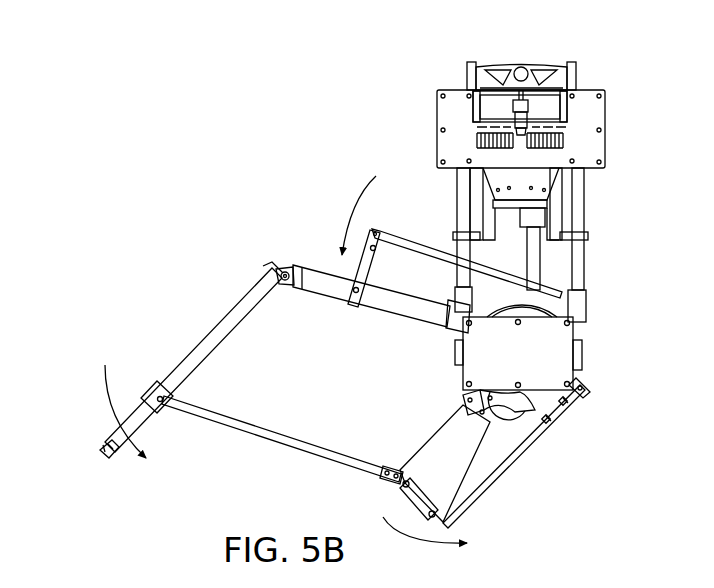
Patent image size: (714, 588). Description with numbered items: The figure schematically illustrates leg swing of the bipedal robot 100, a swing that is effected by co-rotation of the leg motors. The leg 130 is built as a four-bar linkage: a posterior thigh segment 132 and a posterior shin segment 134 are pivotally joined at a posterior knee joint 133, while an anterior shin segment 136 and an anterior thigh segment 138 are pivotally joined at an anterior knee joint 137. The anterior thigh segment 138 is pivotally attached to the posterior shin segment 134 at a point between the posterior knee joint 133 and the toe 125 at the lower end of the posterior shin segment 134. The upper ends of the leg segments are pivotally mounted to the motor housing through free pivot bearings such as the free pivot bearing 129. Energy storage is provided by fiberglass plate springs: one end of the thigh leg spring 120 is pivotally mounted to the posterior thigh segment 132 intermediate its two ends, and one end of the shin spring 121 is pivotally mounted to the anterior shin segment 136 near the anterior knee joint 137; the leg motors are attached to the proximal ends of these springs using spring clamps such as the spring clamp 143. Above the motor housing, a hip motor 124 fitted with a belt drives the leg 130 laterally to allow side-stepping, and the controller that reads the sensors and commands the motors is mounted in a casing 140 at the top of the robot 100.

The bipedal robot 100 is at (590, 76).
The casing 140 is at (437, 110).
The hip motor 124 is at (570, 224).
The thigh leg spring 120 is at (422, 245).
The posterior thigh segment 132 is at (323, 296).
The posterior knee joint 133 is at (283, 263).
The posterior shin segment 134 is at (185, 353).
The leg 130 is at (238, 262).
The toe 125 is at (103, 447).
The anterior thigh segment 138 is at (255, 433).
The free pivot bearing 129 is at (465, 405).
The anterior shin segment 136 is at (402, 460).
The anterior knee joint 137 is at (398, 481).
The shin spring 121 is at (483, 492).
The spring clamp 143 is at (585, 388).